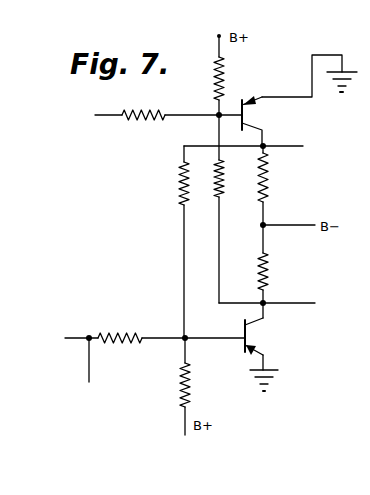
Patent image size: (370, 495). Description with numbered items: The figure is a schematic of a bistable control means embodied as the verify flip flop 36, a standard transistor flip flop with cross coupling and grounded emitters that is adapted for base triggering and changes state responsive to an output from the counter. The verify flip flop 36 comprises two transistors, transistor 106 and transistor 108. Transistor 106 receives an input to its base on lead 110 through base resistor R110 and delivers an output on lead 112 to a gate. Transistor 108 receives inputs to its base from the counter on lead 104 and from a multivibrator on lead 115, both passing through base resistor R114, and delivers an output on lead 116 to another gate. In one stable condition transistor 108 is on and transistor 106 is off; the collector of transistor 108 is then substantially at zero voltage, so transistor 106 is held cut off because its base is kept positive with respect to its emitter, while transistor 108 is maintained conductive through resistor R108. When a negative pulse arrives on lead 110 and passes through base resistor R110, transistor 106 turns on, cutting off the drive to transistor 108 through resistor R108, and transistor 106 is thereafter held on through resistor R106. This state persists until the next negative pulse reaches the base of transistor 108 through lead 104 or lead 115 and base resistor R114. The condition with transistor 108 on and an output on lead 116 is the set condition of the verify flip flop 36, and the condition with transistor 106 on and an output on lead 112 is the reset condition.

The lead 110 is at (105, 115).
The base resistor R110 is at (172, 127).
The transistor 106 is at (318, 129).
The lead 112 is at (302, 147).
The resistor R108 is at (180, 180).
The resistor R106 is at (222, 193).
The lead 116 is at (299, 302).
The transistor 108 is at (308, 347).
The lead 115 is at (89, 338).
The base resistor R114 is at (140, 324).
The lead 104 is at (90, 368).
The verify flip flop 36 is at (221, 370).